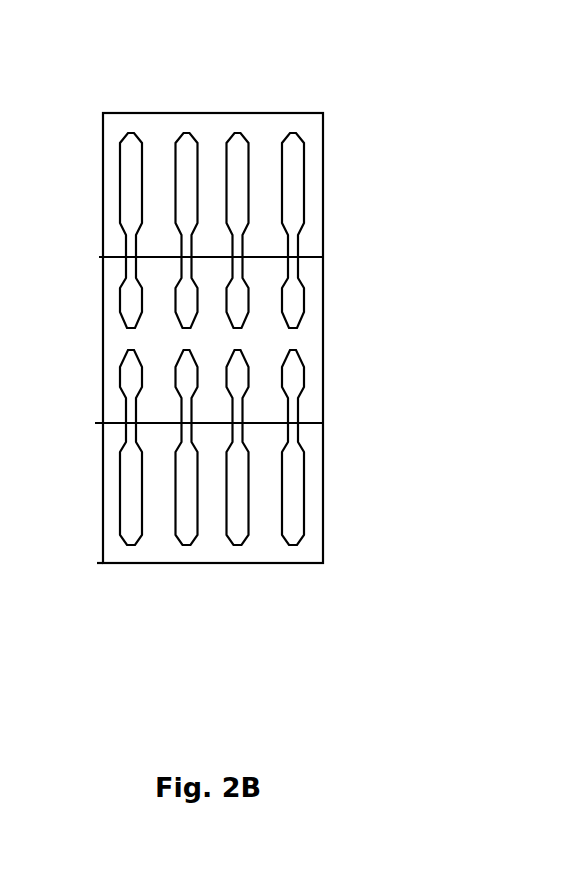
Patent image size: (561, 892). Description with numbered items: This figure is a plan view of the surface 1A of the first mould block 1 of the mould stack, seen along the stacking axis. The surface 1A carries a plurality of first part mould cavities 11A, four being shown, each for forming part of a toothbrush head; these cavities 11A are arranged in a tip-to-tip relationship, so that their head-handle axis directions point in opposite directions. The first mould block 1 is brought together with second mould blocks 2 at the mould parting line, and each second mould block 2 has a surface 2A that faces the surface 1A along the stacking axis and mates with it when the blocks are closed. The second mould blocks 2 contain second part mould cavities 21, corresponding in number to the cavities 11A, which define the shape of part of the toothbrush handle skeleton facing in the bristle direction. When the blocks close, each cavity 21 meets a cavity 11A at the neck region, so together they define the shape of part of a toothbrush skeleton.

The first mould block 1 is at (323, 307).
The surface 1A is at (118, 340).
The second mould block 2 is at (326, 360).
The second part mould cavity 21 is at (292, 172).
The first part mould cavity 11A is at (305, 378).
The surface 2A is at (129, 134).